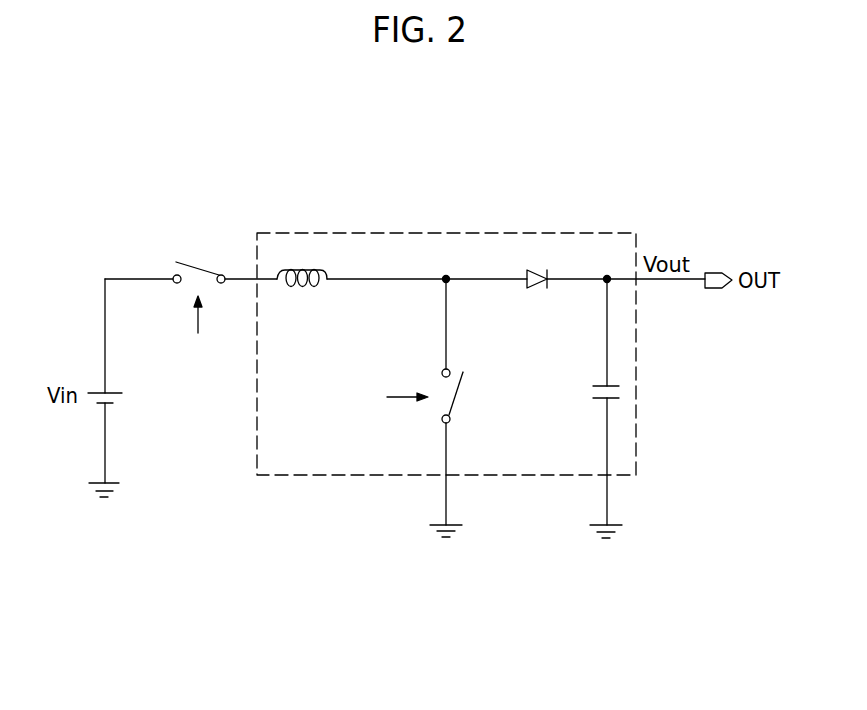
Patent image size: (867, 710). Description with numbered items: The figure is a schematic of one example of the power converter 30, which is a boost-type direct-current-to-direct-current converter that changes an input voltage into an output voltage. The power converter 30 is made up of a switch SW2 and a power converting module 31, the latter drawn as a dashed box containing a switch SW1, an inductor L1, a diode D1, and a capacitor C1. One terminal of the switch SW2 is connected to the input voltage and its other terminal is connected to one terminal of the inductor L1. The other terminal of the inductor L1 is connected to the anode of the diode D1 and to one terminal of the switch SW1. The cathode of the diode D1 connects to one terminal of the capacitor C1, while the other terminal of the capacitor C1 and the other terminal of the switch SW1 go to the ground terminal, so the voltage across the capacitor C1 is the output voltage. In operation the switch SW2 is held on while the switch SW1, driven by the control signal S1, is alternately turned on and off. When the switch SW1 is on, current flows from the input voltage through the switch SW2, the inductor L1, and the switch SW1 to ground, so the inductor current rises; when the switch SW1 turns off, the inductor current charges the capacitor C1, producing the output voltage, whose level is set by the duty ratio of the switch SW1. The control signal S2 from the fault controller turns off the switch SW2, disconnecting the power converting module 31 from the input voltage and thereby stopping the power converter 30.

The power converter 30 is at (423, 181).
The power converting module 31 is at (624, 408).
The switch SW1 is at (478, 396).
The switch SW2 is at (199, 258).
The inductor L1 is at (302, 263).
The diode D1 is at (537, 299).
The capacitor C1 is at (592, 408).
The control signal S1 is at (392, 397).
The control signal S2 is at (199, 331).